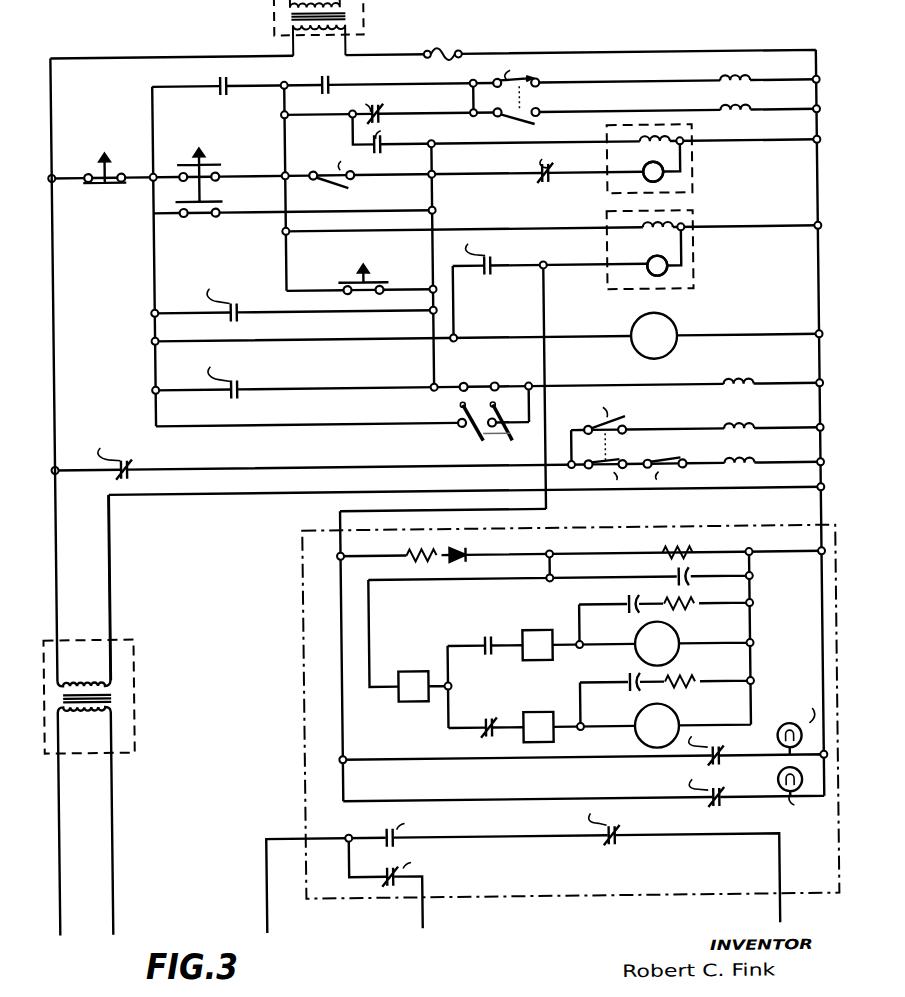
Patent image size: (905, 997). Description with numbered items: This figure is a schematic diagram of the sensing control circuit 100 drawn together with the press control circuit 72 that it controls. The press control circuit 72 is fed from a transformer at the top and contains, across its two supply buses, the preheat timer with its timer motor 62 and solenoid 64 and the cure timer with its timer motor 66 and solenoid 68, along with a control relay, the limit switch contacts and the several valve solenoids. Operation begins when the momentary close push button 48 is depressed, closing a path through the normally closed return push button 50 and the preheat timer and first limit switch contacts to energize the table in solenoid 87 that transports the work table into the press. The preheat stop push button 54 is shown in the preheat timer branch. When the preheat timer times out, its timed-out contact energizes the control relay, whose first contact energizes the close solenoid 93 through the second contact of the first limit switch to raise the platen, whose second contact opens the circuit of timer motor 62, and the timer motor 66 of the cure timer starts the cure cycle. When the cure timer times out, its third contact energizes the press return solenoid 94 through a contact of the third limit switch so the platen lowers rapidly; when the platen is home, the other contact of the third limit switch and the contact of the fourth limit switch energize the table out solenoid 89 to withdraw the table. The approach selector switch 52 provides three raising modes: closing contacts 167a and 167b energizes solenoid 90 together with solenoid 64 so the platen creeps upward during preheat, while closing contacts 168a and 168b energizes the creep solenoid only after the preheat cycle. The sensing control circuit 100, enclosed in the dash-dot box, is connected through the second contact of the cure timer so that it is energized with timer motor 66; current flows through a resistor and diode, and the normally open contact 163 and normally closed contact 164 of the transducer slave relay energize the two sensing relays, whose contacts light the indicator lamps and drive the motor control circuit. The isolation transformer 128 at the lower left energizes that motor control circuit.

The press control circuit 72 is at (747, 18).
The table in solenoid 87 is at (769, 72).
The close solenoid 93 is at (792, 108).
The solenoid 64 is at (687, 142).
The timer motor 62 is at (647, 176).
The solenoid 68 is at (647, 229).
The timer motor 66 is at (648, 273).
The solenoid 90 is at (793, 380).
The press return solenoid 94 is at (793, 425).
The table out solenoid 89 is at (780, 454).
The return push button 50 is at (104, 159).
The close push button 48 is at (202, 160).
The preheat stop push button 54 is at (362, 277).
The approach selector switch 52 is at (405, 408).
The contact 167a is at (461, 380).
The contact 167b is at (495, 380).
The contact 168a is at (458, 413).
The contact 168b is at (516, 433).
The sensing control circuit 100 is at (518, 720).
The isolation transformer 128 is at (131, 676).
The normally open contact 163 is at (486, 640).
The normally closed contact 164 is at (486, 720).